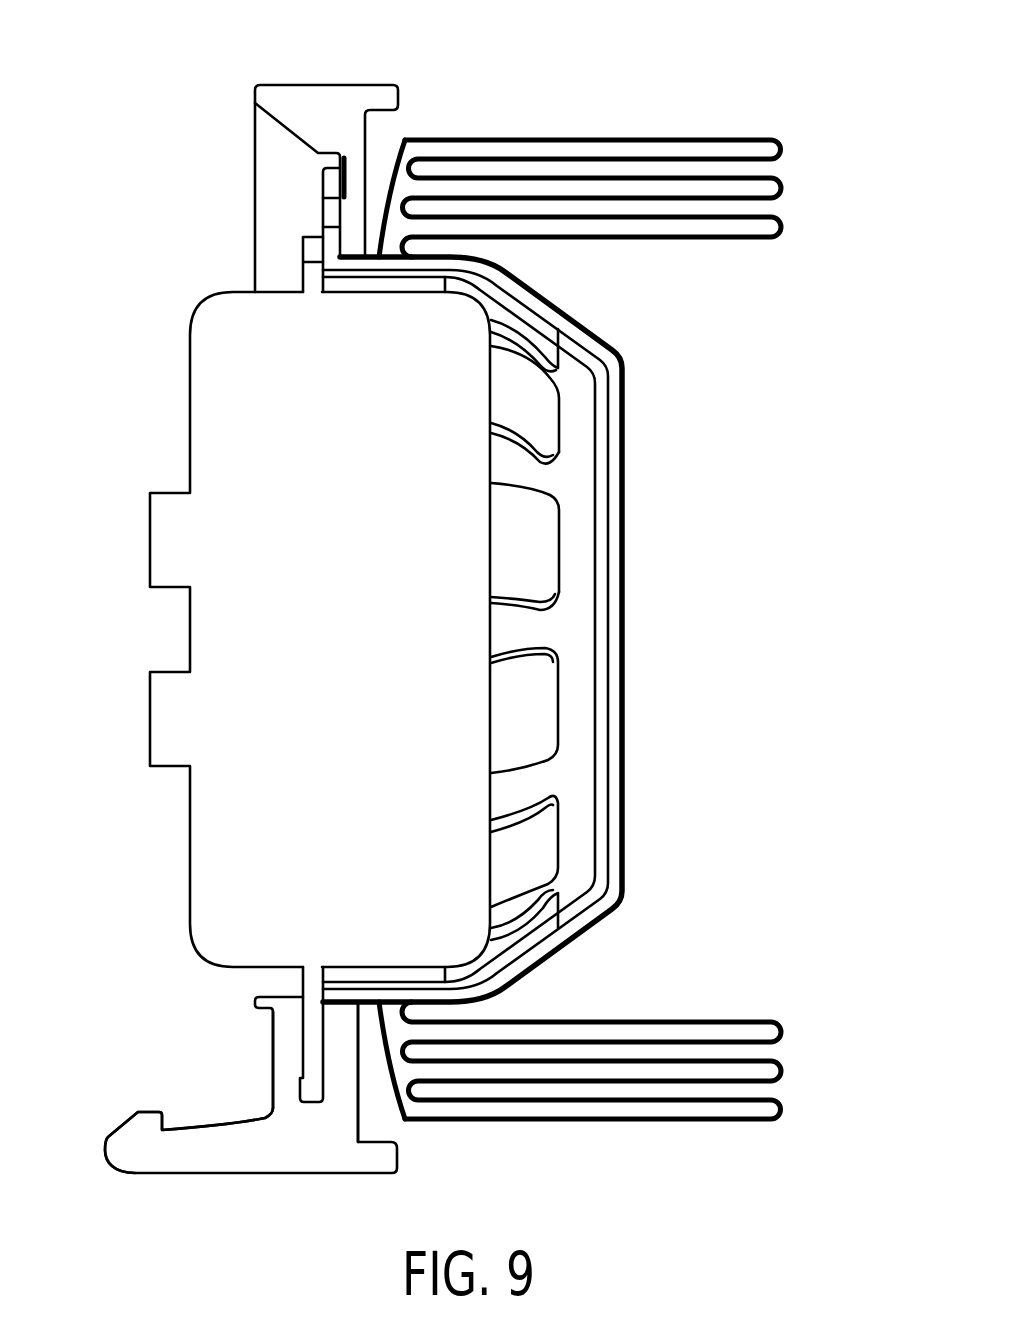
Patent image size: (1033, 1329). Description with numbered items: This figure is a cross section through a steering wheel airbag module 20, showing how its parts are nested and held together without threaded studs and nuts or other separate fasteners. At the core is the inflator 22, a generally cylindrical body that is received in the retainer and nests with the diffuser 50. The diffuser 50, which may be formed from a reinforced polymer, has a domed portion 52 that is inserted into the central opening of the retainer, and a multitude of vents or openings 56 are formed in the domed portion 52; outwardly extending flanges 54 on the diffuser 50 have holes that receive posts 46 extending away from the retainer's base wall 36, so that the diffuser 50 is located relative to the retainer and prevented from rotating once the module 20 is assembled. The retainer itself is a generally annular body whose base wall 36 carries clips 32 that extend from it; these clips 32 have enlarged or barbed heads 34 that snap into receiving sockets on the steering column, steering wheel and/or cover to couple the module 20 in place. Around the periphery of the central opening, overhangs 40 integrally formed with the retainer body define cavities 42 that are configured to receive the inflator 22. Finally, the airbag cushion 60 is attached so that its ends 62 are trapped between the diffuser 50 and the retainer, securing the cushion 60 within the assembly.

The airbag module 20 is at (587, 98).
The inflator 22 is at (217, 415).
The clips 32 is at (336, 95).
The barbed heads 34 is at (128, 1142).
The base wall 36 is at (352, 1115).
The overhangs 40 is at (287, 1040).
The cavities 42 is at (313, 1090).
The posts 46 is at (333, 210).
The diffuser 50 is at (602, 622).
The domed portion 52 is at (577, 700).
The flanges 54 is at (333, 187).
The openings 56 is at (537, 532).
The airbag cushion 60 is at (686, 1120).
The ends 62 is at (348, 162).